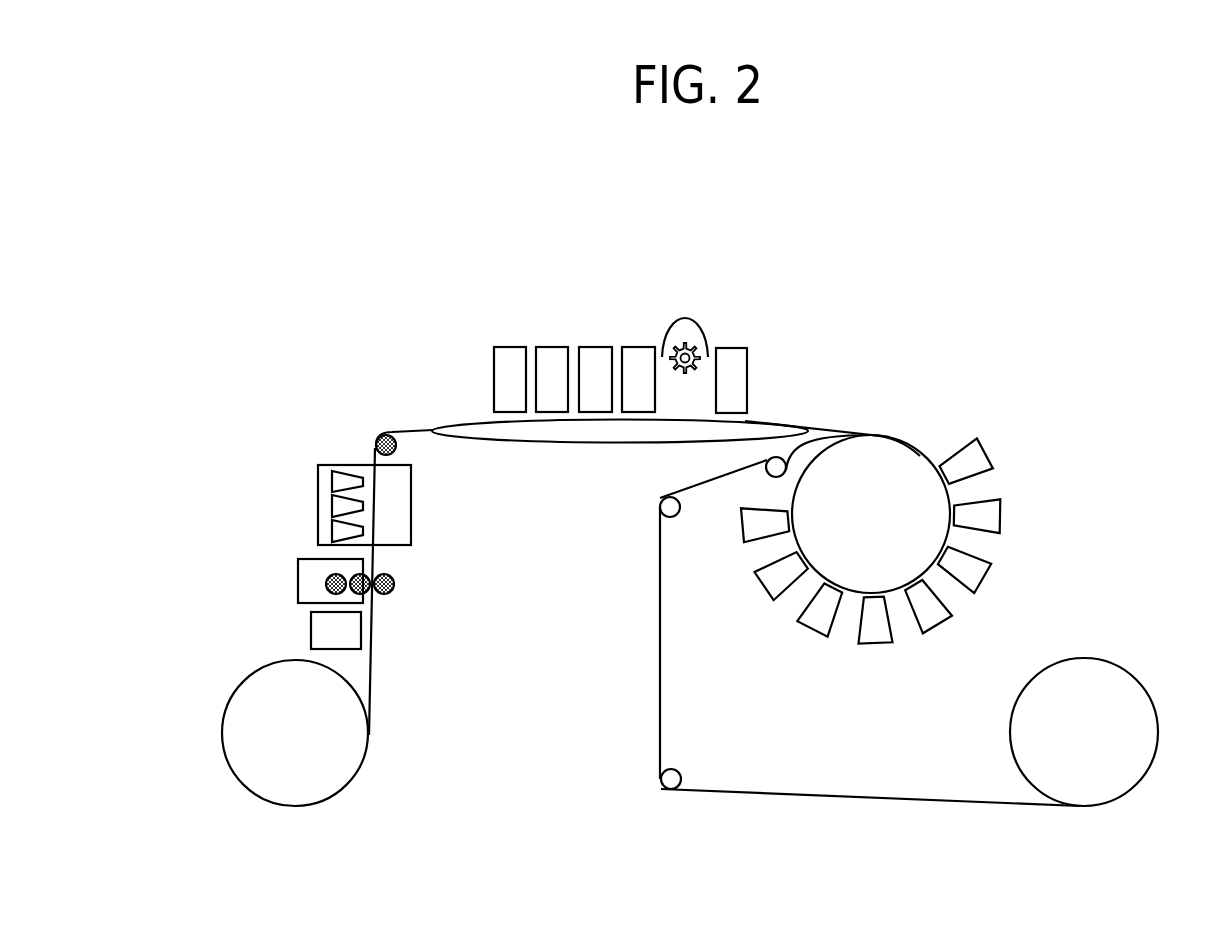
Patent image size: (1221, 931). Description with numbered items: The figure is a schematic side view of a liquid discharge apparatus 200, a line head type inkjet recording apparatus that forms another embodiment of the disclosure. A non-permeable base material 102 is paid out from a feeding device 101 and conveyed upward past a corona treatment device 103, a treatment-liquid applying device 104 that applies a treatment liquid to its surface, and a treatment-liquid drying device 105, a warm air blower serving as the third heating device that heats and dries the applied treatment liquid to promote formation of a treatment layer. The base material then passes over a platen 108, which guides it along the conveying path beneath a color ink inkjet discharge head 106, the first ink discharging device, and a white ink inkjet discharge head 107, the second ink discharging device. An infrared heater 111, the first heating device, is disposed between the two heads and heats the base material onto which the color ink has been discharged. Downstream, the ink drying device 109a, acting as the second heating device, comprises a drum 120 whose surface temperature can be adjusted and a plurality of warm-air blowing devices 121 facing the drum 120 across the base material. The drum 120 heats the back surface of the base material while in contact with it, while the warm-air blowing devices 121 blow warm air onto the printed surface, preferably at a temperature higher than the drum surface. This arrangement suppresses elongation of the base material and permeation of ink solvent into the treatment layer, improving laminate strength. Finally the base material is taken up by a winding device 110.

The image forming apparatus 200 is at (712, 217).
The feeding device 101 is at (222, 718).
The non-permeable base material 102 is at (371, 689).
The corona treatment device 103 is at (311, 633).
The treatment-liquid applying device 104 is at (298, 578).
The treatment-liquid drying device 105 is at (318, 504).
The color ink inkjet discharge head 106 is at (655, 344).
The white ink inkjet discharge head 107 is at (730, 347).
The platen 108 is at (581, 443).
The infrared heater 111 is at (685, 318).
The drum 120 is at (890, 435).
The ink drying device 109a is at (927, 442).
The warm-air blowing device 121 is at (982, 488).
The winding device 110 is at (1082, 658).